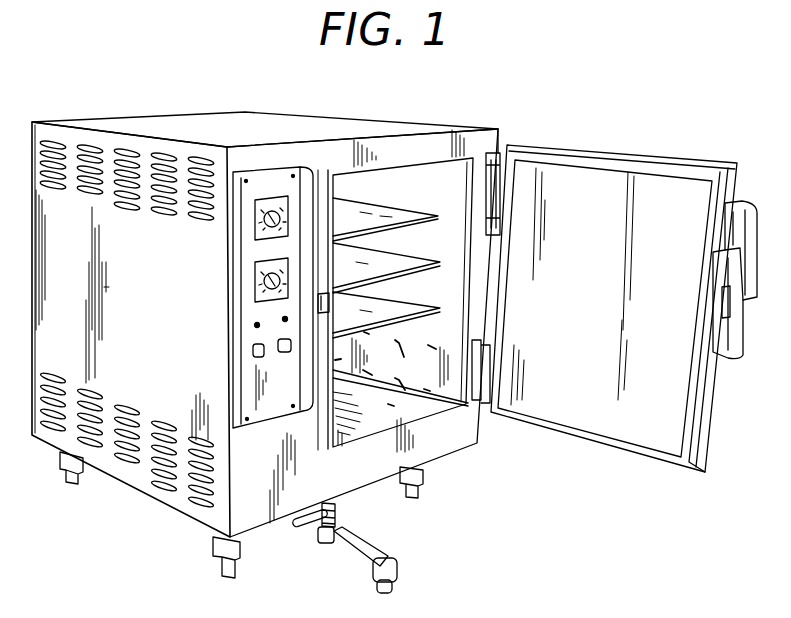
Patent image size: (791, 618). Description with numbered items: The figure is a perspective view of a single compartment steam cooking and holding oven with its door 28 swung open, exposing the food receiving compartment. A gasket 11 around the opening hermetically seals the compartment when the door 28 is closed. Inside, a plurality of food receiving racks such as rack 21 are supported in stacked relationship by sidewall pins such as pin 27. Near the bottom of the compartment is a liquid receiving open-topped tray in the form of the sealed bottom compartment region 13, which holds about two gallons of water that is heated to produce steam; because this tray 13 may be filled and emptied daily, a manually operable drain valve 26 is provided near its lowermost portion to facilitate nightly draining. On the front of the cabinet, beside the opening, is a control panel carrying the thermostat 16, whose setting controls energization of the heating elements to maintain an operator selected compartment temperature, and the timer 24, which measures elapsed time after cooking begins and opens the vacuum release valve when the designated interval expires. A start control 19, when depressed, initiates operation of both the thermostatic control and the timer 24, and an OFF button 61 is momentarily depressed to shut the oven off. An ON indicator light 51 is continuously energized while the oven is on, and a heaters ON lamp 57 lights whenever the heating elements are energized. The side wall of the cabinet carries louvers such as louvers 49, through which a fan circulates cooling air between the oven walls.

The gasket 11 is at (690, 408).
The sealed bottom compartment region 13 is at (362, 413).
The thermostat 16 is at (276, 195).
The start control 19 is at (252, 352).
The food receiving rack 21 is at (393, 217).
The timer 24 is at (258, 279).
The drain valve 26 is at (340, 510).
The sidewall pin 27 is at (432, 347).
The door 28 is at (652, 422).
The louvers 49 is at (113, 175).
The ON indicator light 51 is at (256, 325).
The heaters ON lamp 57 is at (283, 319).
The OFF button 61 is at (288, 354).